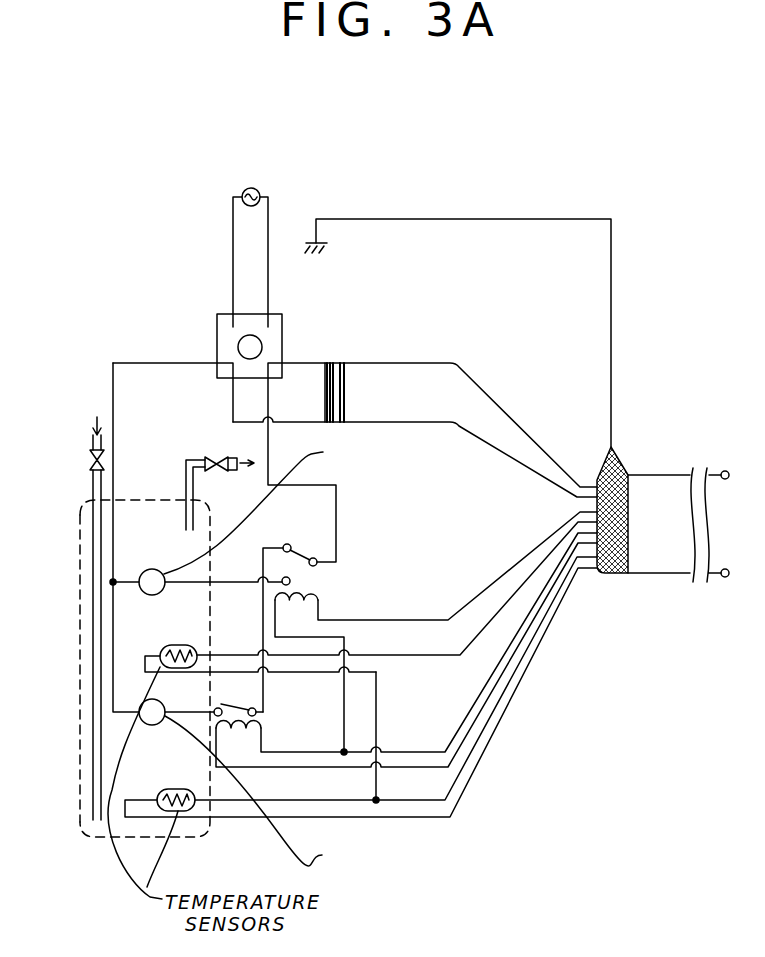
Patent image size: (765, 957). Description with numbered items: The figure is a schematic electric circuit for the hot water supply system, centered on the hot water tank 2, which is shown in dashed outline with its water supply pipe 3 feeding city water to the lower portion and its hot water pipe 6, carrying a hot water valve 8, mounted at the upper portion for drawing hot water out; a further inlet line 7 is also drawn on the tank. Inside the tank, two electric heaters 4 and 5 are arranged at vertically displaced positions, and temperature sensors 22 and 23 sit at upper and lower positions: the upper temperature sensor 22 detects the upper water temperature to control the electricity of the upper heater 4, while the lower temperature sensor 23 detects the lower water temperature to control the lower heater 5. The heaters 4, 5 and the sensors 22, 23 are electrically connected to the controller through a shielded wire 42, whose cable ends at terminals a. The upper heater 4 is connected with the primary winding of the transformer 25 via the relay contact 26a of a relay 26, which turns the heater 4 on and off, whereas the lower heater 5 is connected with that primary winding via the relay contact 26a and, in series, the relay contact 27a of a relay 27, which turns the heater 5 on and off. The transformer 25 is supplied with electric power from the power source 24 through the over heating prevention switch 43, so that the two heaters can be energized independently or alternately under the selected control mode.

The hot water tank 2 is at (80, 681).
The water supply pipe 3 is at (80, 611).
The upper electric heater 4 is at (152, 569).
The lower electric heater 5 is at (150, 726).
The hot water pipe 6 is at (185, 470).
The inlet pipe with valve 7 is at (90, 460).
The hot water valve 8 is at (215, 471).
The upper temperature sensor 22 is at (182, 644).
The lower temperature sensor 23 is at (180, 789).
The power source 24 is at (252, 188).
The transformer 25 is at (337, 352).
The relay 26 is at (312, 578).
The relay contact 26a is at (296, 541).
The relay 27 is at (262, 718).
The relay contact 27a is at (235, 700).
The shielded wire 42 is at (654, 580).
The over heating prevention switch 43 is at (222, 337).
The terminals a is at (735, 525).